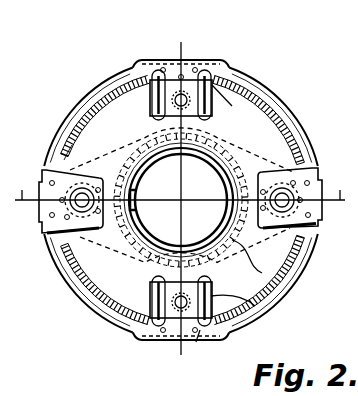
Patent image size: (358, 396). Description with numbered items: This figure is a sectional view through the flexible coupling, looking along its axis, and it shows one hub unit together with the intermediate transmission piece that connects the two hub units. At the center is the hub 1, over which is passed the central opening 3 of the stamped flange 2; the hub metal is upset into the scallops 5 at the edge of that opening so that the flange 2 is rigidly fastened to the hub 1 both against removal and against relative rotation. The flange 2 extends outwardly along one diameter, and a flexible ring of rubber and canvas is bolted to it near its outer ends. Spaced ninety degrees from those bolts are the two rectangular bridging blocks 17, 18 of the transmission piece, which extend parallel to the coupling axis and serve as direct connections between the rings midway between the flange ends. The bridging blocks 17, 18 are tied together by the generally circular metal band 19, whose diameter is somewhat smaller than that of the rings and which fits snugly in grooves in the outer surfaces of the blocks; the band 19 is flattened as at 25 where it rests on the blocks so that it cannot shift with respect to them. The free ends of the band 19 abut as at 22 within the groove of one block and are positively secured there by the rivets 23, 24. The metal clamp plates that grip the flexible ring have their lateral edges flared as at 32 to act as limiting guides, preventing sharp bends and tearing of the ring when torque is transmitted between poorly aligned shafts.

The hub 1 is at (181, 355).
The flange 2 is at (253, 150).
The central opening 3 is at (178, 184).
The scallops 5 is at (262, 273).
The bridging block 17 is at (213, 102).
The bridging block 18 is at (255, 306).
The metal band 19 is at (87, 283).
The abutting free ends of the band 22 is at (196, 342).
The rivet 23 is at (148, 321).
The rivet 24 is at (211, 305).
The flattened part of the band 25 is at (147, 318).
The flares 32 is at (208, 72).